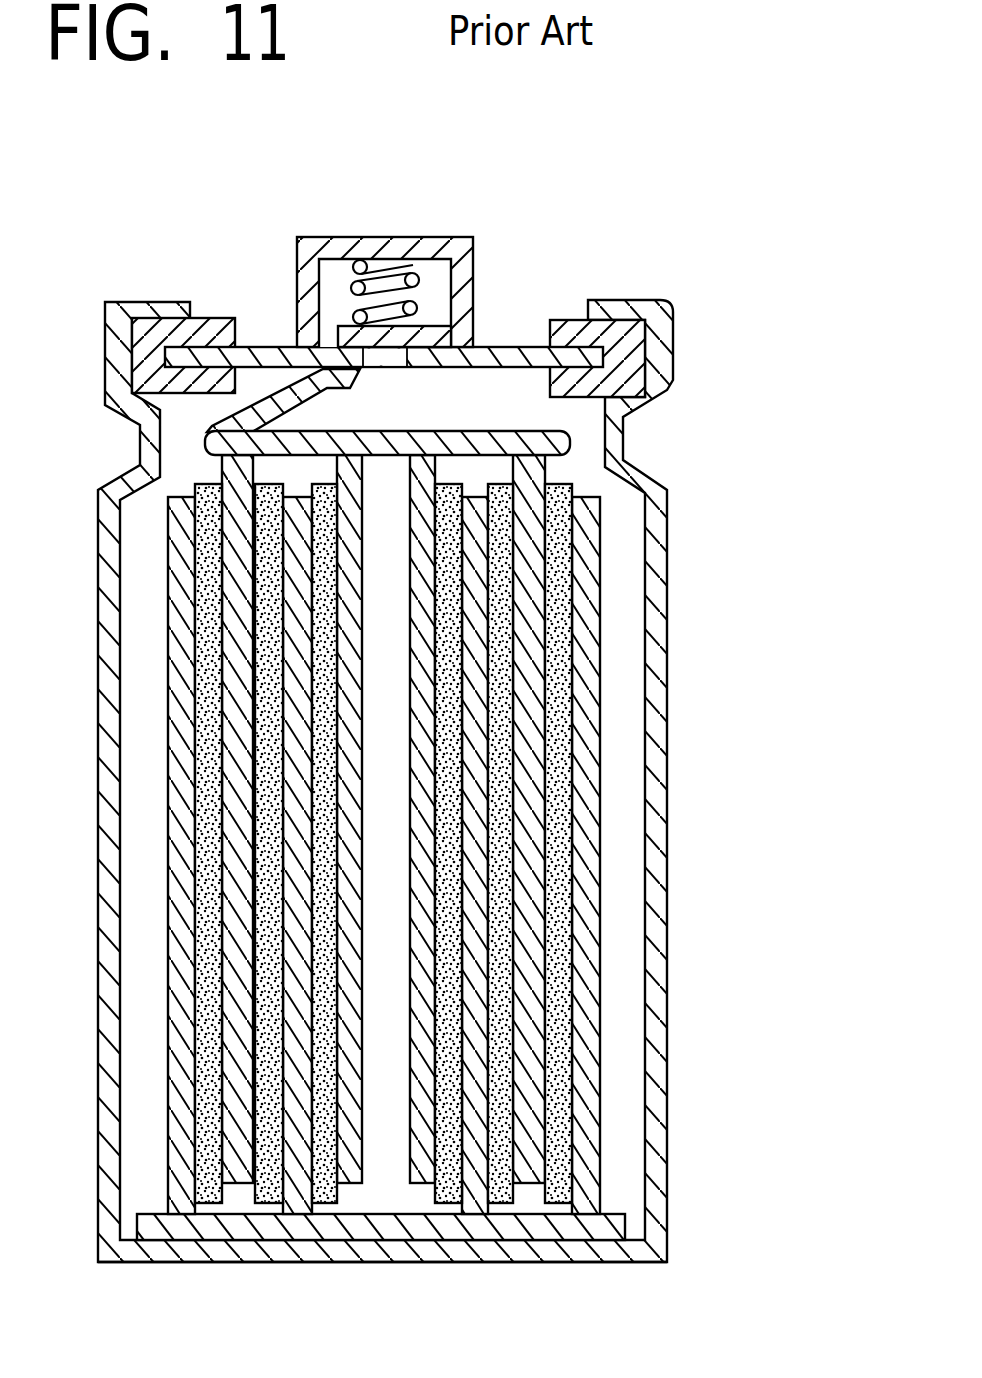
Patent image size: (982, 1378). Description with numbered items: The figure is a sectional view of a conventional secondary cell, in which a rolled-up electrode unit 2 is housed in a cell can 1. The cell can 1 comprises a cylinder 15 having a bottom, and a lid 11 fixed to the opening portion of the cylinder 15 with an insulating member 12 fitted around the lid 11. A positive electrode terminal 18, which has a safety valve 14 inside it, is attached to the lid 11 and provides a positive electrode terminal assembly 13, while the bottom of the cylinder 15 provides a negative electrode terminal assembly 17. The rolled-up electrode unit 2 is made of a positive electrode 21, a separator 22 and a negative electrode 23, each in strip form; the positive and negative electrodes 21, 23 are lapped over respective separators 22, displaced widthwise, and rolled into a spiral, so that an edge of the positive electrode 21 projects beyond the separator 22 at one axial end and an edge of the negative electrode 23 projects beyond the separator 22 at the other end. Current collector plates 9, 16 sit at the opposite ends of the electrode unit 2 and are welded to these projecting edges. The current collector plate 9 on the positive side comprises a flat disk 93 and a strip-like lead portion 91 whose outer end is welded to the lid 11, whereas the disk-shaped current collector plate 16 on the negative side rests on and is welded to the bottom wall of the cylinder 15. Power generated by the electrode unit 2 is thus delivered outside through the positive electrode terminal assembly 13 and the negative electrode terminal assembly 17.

The cell can 1 is at (418, 702).
The rolled-up electrode unit 2 is at (452, 834).
The current collector plate 9 is at (450, 411).
The lid 11 is at (518, 347).
The insulating member 12 is at (212, 320).
The positive electrode terminal assembly 13 is at (369, 213).
The safety valve 14 is at (424, 325).
The cylinder 15 is at (662, 612).
The current collector plate 16 is at (565, 1233).
The negative electrode terminal assembly 17 is at (417, 1257).
The positive electrode terminal 18 is at (355, 237).
The positive electrode 21 is at (528, 950).
The separator 22 is at (563, 875).
The negative electrode 23 is at (587, 807).
The lead portion 91 is at (323, 370).
The flat disk 93 is at (556, 443).